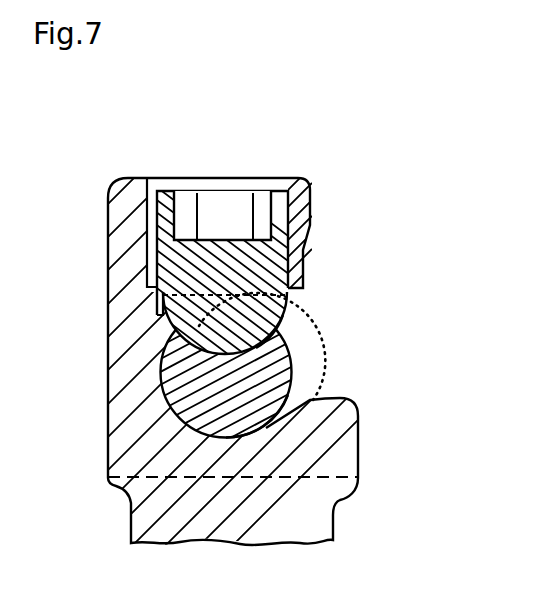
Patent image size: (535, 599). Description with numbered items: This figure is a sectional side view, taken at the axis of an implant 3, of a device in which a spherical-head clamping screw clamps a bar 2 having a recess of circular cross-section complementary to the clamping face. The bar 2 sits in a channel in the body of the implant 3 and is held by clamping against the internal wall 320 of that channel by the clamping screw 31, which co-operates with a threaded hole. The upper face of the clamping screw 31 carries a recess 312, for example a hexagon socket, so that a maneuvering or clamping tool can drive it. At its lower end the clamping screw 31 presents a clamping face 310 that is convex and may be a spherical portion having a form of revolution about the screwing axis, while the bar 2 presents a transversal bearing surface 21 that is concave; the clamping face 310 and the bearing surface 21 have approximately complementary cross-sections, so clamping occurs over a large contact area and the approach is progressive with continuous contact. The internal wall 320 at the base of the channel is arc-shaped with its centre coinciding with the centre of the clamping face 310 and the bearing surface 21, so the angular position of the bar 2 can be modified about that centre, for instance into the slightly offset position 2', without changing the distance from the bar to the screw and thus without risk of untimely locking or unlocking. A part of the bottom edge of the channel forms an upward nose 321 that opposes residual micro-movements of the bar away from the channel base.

The bar 2 is at (169, 337).
The slightly offset position of the bar 2' is at (304, 334).
The implant 3 is at (150, 510).
The bearing surface 21 is at (265, 338).
The clamping screw 31 is at (167, 230).
The clamping face 310 is at (157, 313).
The recess 312 is at (240, 207).
The internal wall 320 is at (259, 441).
The upward nose 321 is at (340, 426).